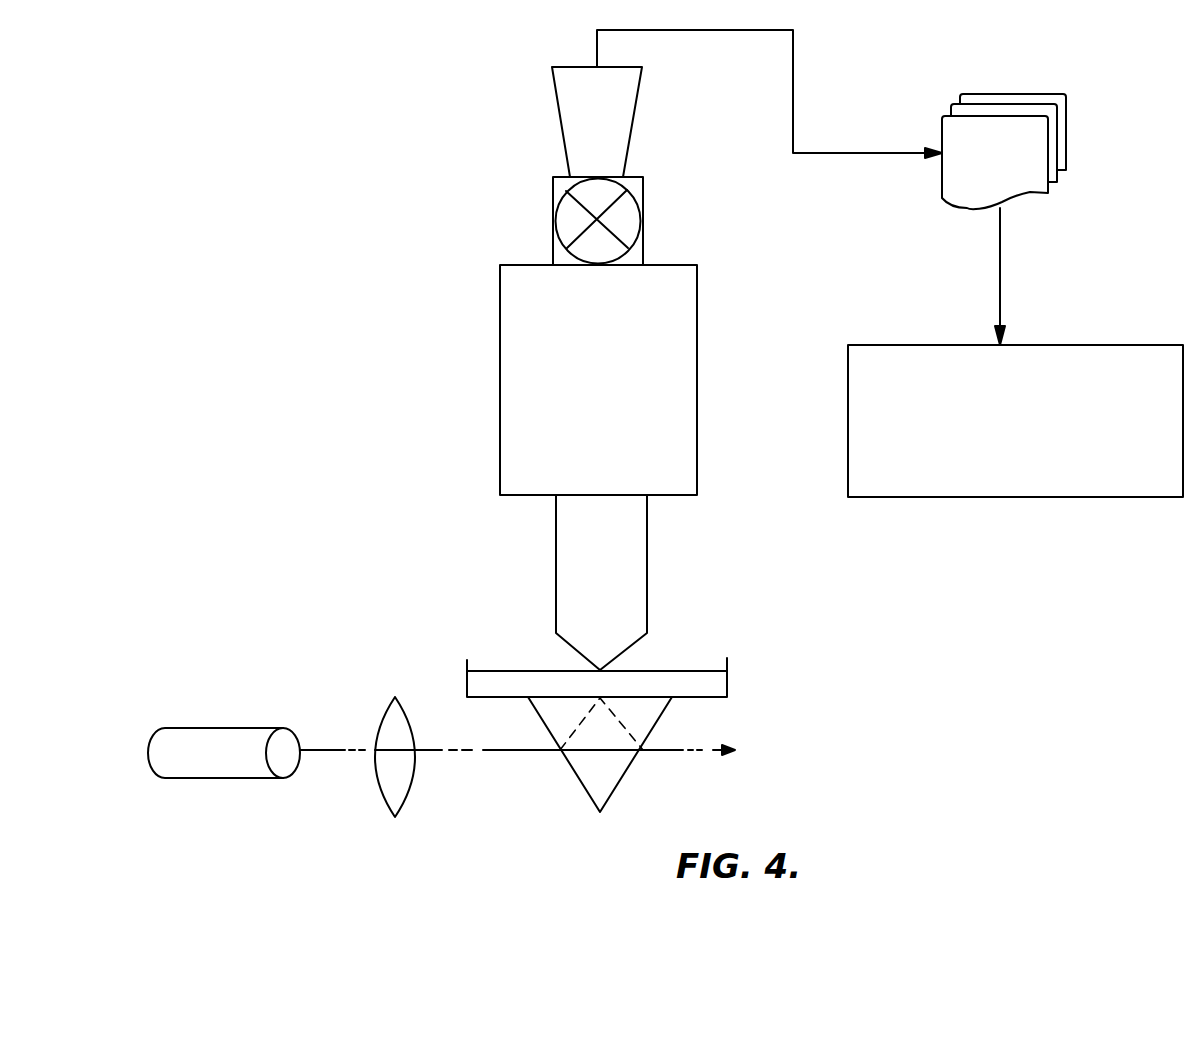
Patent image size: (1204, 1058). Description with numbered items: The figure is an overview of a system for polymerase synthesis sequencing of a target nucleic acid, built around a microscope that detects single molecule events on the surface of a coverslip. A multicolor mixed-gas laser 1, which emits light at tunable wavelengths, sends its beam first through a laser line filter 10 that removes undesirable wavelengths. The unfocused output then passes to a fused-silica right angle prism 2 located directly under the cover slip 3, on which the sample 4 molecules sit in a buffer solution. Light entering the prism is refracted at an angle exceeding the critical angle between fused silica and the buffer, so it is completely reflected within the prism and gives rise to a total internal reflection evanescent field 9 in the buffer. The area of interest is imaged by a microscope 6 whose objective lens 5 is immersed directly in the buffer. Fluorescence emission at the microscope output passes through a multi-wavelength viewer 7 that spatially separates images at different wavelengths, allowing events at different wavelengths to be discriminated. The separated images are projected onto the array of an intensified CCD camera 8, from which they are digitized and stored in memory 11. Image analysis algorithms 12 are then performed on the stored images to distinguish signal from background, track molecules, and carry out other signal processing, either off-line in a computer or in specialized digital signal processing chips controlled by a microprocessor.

The multicolor mixed-gas laser 1 is at (195, 778).
The fused-silica right angle prism 2 is at (618, 788).
The cover slip 3 is at (728, 695).
The sample 4 is at (503, 670).
The objective lens 5 is at (647, 553).
The microscope 6 is at (500, 378).
The multi-wavelength viewer 7 is at (553, 220).
The intensified CCD camera 8 is at (562, 125).
The total internal reflection evanescent field 9 is at (602, 684).
The laser line filter 10 is at (388, 807).
The memory 11 is at (1003, 93).
The image analysis algorithms 12 is at (1137, 343).